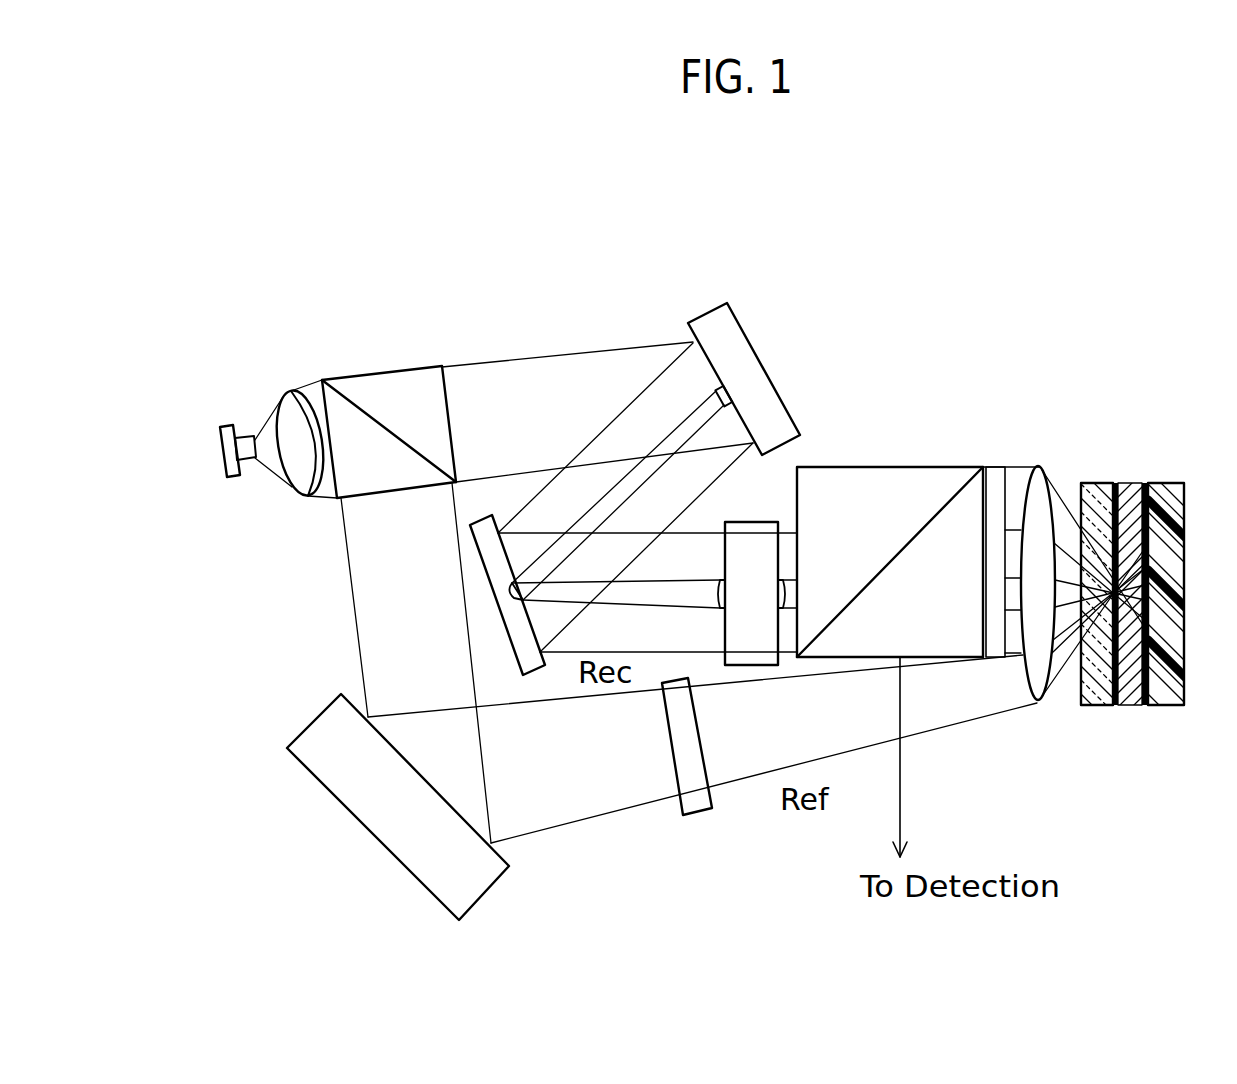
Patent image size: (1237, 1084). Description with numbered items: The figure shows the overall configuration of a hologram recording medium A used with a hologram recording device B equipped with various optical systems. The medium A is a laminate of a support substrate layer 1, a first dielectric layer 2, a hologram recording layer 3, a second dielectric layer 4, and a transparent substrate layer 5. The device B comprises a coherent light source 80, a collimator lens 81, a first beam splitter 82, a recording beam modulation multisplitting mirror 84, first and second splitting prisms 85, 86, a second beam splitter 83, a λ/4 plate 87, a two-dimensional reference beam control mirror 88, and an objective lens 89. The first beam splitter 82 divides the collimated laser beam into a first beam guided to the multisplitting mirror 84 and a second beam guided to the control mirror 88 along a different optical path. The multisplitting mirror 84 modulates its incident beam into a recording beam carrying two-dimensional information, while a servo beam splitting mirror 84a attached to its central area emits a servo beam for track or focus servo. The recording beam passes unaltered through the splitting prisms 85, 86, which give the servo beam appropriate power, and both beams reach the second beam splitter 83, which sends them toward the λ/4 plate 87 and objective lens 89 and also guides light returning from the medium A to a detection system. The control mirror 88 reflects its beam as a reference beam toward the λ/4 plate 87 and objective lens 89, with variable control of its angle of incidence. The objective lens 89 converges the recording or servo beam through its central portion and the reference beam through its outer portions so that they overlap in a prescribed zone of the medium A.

The support substrate layer 1 is at (1180, 707).
The first dielectric layer 2 is at (1144, 707).
The hologram recording layer 3 is at (1130, 707).
The second dielectric layer 4 is at (1113, 707).
The transparent substrate layer 5 is at (1090, 707).
The coherent light source 80 is at (227, 427).
The collimator lens 81 is at (293, 392).
The first beam splitter 82 is at (378, 370).
The second beam splitter 83 is at (905, 467).
The recording beam modulation multisplitting mirror 84 is at (750, 337).
The servo beam splitting mirror 84a is at (722, 389).
The first splitting prism 85 is at (503, 640).
The second splitting prism 86 is at (753, 522).
The λ/4 plate 87 is at (997, 468).
The two-dimensional reference beam control mirror 88 is at (414, 879).
The objective lens 89 is at (1040, 468).
The hologram recording medium A is at (1129, 590).
The hologram recording device B is at (789, 322).